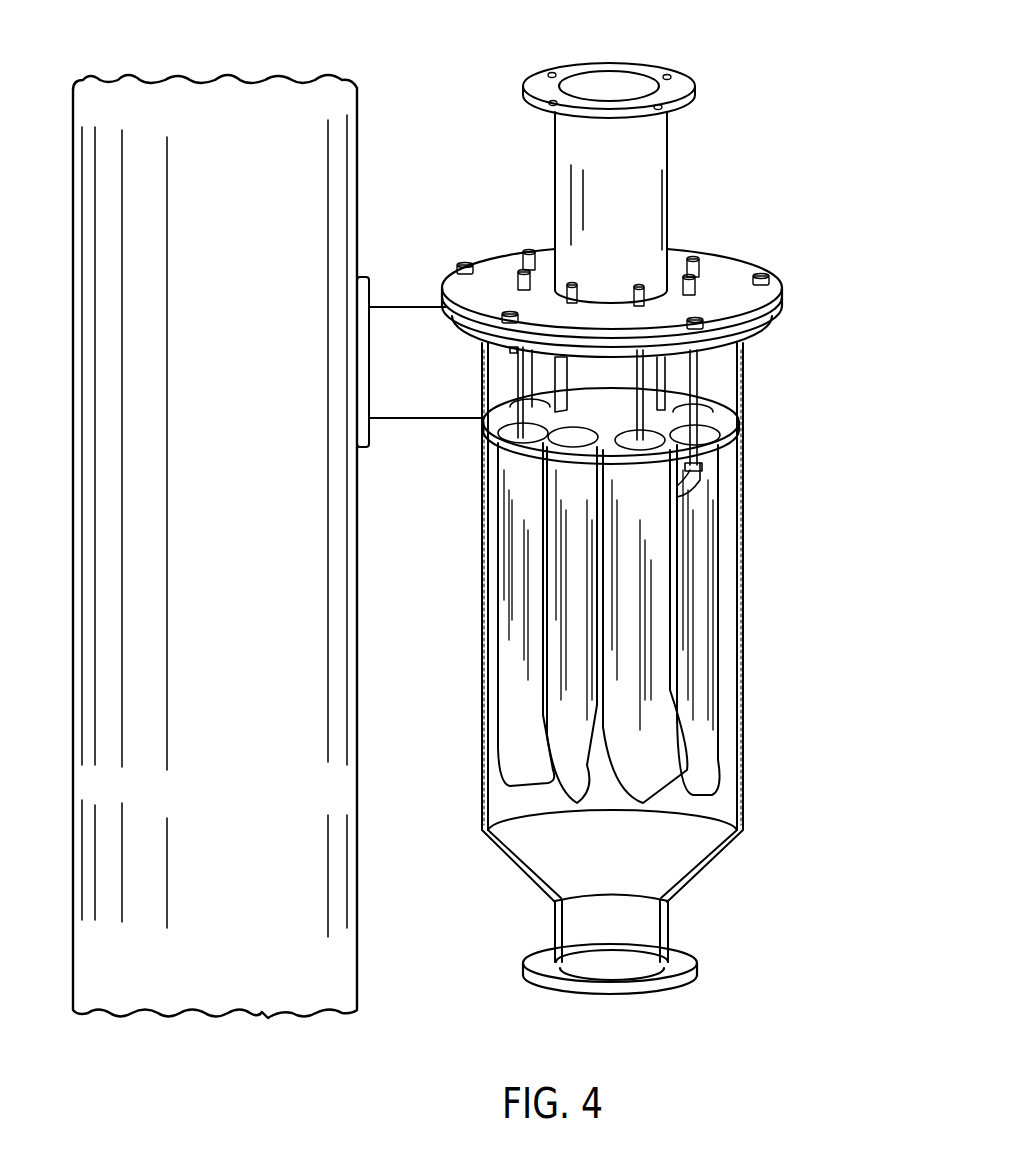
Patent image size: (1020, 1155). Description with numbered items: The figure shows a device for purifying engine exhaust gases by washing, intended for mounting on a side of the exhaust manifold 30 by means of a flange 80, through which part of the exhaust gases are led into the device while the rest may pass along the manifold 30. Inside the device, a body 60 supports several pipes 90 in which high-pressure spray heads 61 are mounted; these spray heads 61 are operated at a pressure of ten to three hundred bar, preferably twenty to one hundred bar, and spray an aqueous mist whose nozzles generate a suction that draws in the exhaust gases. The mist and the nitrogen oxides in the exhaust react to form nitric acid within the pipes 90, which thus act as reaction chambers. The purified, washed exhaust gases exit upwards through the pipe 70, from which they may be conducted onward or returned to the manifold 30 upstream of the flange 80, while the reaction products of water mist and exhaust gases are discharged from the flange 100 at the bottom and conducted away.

The exhaust manifold 30 is at (357, 163).
The body 60 is at (767, 323).
The high-pressure spray heads 61 is at (700, 474).
The pipe 70 is at (623, 85).
The flange 80 is at (366, 296).
The pipes 90 is at (703, 543).
The flange 100 is at (675, 960).